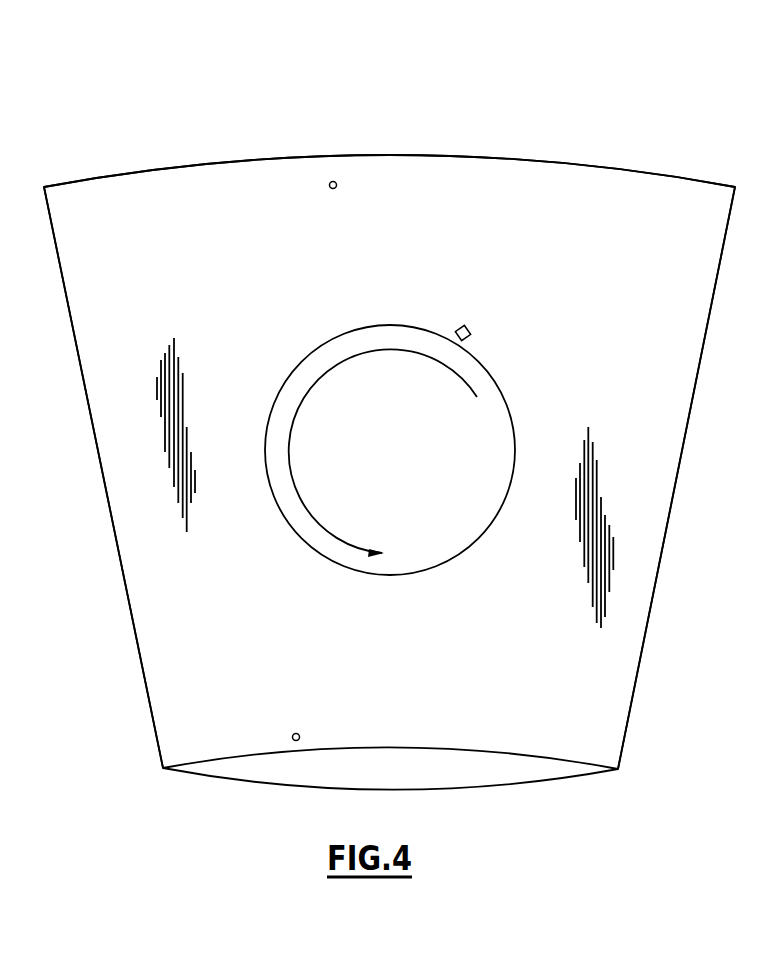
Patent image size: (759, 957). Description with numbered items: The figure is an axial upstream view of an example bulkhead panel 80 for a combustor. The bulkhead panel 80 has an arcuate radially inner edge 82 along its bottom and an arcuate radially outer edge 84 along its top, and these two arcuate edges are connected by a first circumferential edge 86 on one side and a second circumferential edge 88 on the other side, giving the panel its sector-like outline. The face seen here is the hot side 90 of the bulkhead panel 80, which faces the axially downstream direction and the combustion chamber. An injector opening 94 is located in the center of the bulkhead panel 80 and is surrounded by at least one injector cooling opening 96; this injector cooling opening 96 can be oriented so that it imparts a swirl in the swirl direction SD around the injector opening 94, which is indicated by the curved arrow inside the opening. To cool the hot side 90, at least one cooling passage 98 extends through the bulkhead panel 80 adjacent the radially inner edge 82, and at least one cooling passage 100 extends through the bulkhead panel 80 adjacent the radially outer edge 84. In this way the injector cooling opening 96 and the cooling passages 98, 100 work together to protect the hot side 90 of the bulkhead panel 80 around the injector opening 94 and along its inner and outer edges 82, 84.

The bulkhead panel 80 is at (652, 95).
The radially inner edge 82 is at (524, 757).
The radially outer edge 84 is at (622, 166).
The first circumferential edge 86 is at (103, 478).
The second circumferential edge 88 is at (680, 460).
The hot side 90 is at (632, 595).
The injector opening 94 is at (486, 422).
The injector cooling opening 96 is at (468, 330).
The cooling passage 98 is at (297, 741).
The cooling passage 100 is at (337, 181).
The swirl direction SD is at (289, 433).